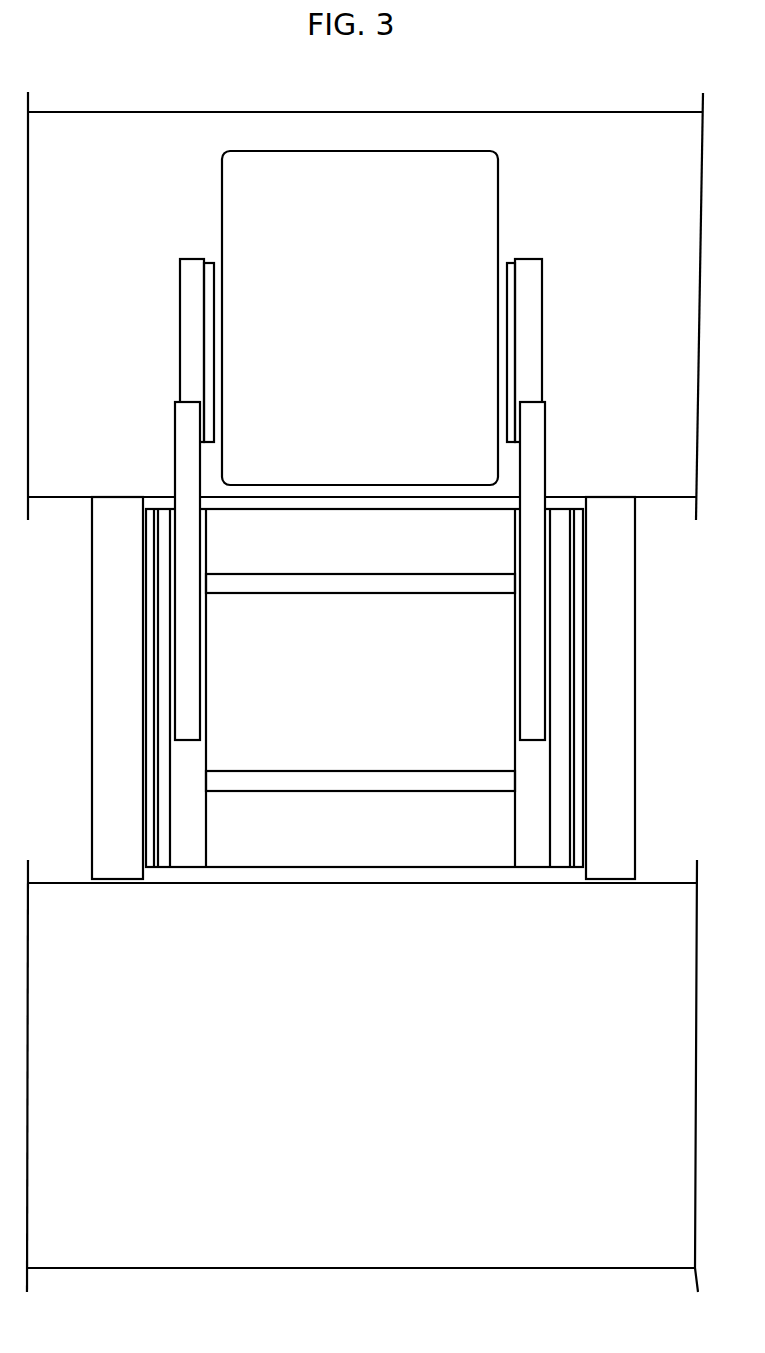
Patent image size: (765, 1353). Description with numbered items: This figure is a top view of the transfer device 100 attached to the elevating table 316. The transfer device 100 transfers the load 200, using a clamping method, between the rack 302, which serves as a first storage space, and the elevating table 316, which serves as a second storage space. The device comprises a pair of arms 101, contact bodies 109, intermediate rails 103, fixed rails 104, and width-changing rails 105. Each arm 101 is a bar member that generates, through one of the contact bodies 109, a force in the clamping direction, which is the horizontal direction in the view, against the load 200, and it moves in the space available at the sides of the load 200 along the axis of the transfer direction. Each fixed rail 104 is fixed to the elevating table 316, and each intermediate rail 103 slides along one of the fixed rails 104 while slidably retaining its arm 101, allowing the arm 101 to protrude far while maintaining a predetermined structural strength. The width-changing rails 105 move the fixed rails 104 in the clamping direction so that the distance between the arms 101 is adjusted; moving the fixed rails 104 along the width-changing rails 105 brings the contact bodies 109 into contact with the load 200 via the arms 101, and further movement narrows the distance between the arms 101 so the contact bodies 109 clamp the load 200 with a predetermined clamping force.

The transfer device 100 is at (364, 715).
The arm 101 is at (187, 305).
The intermediate rail 103 is at (188, 460).
The fixed rail 104 is at (190, 752).
The width-changing rail 105 is at (372, 585).
The contact body 109 is at (215, 346).
The load 200 is at (373, 317).
The rack 302 is at (608, 163).
The elevating table 316 is at (107, 603).